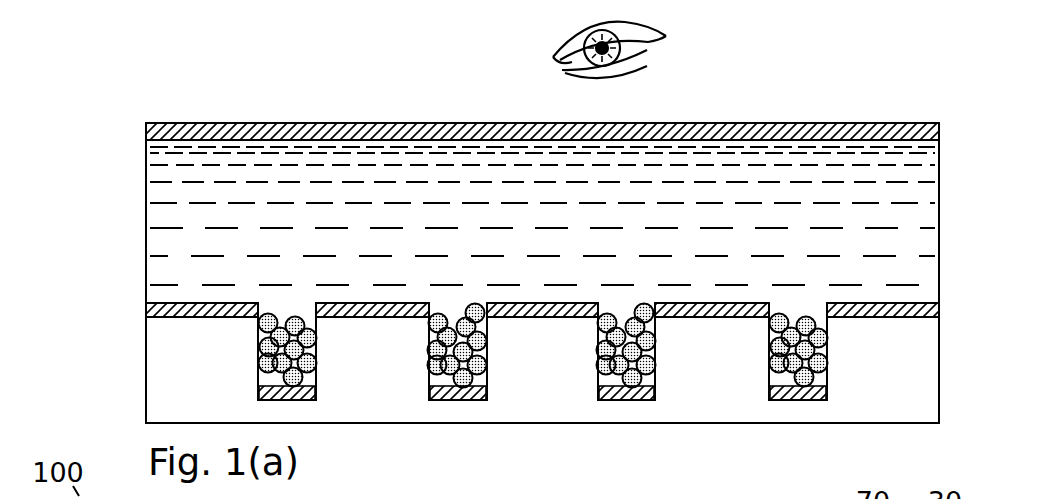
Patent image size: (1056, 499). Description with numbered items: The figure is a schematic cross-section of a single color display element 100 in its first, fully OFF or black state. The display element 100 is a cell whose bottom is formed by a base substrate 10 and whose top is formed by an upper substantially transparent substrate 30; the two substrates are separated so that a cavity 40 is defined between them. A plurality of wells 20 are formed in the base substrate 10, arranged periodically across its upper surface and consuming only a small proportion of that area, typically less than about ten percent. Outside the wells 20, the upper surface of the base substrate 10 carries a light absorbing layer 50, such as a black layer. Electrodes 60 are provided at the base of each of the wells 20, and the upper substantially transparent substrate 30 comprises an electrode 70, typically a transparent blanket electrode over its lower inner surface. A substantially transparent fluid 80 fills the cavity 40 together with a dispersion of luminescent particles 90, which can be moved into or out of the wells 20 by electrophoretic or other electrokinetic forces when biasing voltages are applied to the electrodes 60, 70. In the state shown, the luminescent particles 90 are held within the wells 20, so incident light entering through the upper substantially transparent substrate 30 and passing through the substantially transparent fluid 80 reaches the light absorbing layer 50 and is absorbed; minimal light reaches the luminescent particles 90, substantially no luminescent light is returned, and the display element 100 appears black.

The single color display element 100 is at (85, 133).
The base substrate 10 is at (888, 398).
The wells 20 is at (270, 305).
The upper substantially transparent substrate 30 is at (908, 134).
The cavity 40 is at (188, 218).
The light absorbing layer 50 is at (940, 312).
The electrodes 60 is at (297, 395).
The electrode 70 is at (946, 128).
The substantially transparent fluid 80 is at (893, 191).
The luminescent particles 90 is at (430, 318).